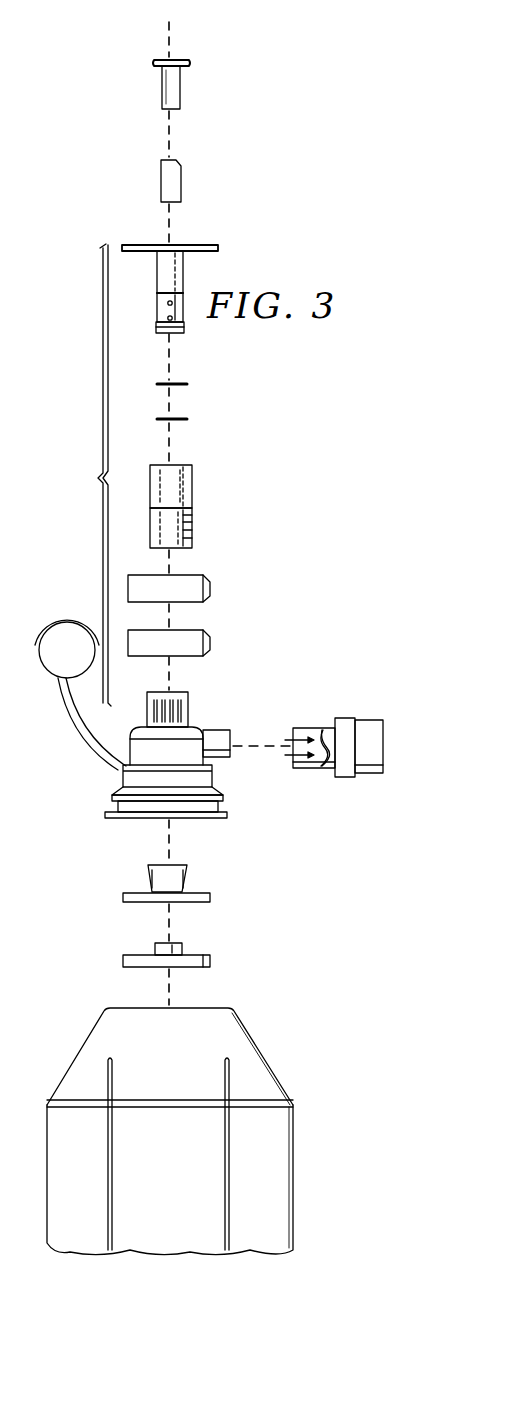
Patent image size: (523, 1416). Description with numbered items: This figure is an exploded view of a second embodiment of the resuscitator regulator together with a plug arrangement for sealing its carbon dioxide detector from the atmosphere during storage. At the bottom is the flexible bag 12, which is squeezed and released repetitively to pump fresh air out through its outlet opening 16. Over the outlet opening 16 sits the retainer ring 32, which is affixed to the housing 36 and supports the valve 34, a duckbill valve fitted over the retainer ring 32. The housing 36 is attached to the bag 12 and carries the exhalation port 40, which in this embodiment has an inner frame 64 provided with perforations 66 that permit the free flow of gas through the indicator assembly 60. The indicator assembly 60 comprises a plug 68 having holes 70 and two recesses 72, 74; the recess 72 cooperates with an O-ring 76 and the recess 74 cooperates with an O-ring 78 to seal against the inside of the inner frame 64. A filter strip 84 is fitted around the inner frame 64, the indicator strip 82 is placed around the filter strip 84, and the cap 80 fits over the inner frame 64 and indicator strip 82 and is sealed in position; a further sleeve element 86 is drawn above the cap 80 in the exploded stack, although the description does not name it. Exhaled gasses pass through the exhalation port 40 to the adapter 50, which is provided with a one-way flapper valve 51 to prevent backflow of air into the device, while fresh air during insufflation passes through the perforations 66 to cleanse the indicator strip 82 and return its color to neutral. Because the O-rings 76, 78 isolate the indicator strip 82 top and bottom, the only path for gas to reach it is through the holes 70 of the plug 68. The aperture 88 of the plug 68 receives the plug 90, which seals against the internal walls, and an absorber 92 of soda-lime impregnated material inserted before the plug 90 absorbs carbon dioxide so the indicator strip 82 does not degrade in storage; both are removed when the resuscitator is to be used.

The flexible bag 12 is at (185, 1119).
The outlet opening 16 is at (190, 1009).
The retainer ring 32 is at (210, 961).
The valve 34 is at (210, 898).
The housing 36 is at (223, 797).
The exhalation port 40 is at (241, 738).
The adapter 50 is at (315, 783).
The one-way flapper valve 51 is at (321, 728).
The indicator assembly 60 is at (91, 475).
The inner frame 64 is at (198, 728).
The perforations 66 is at (150, 700).
The plug 68 is at (157, 270).
The holes 70 is at (163, 318).
The recess 72 is at (184, 327).
The recess 74 is at (157, 293).
The O-ring 76 is at (187, 419).
The O-ring 78 is at (187, 384).
The cap 80 is at (192, 532).
The indicator strip 82 is at (210, 586).
The filter strip 84 is at (210, 641).
The upper sleeve 86 is at (180, 465).
The aperture 88 is at (200, 244).
The plug 90 is at (190, 63).
The absorber 92 is at (181, 182).